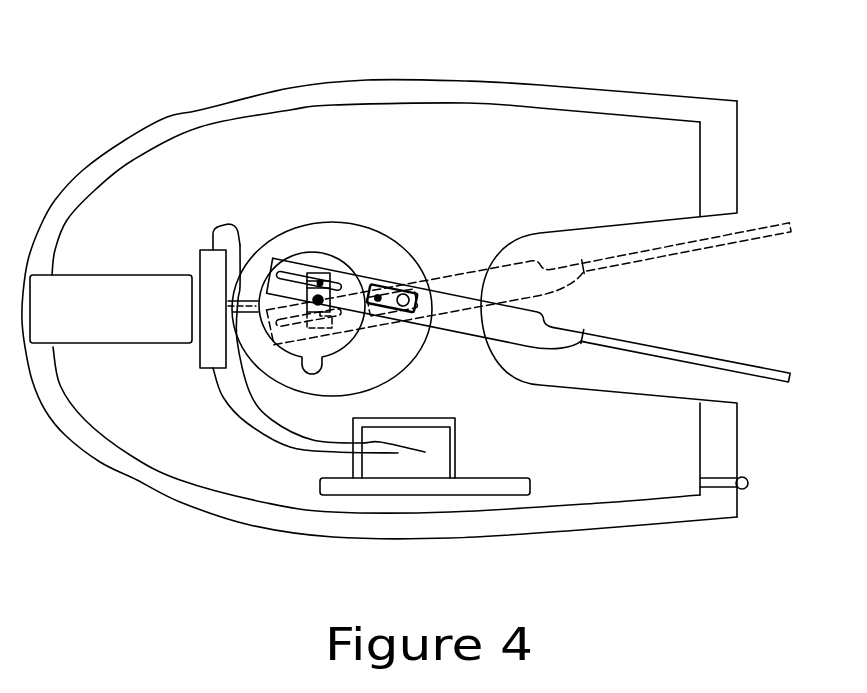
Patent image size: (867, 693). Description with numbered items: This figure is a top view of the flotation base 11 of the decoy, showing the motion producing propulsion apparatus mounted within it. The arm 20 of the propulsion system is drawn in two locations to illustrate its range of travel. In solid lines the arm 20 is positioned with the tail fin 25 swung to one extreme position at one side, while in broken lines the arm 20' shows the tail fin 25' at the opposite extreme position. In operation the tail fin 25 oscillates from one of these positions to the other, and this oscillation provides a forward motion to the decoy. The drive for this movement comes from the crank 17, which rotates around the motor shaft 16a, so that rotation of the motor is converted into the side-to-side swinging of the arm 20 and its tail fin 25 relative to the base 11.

The base 11 is at (180, 502).
The crank 17 is at (313, 283).
The motor shaft 16a is at (321, 283).
The arm 20 is at (426, 422).
The arm 20' is at (427, 185).
The tail fin 25 is at (707, 395).
The tail fin 25' is at (689, 213).